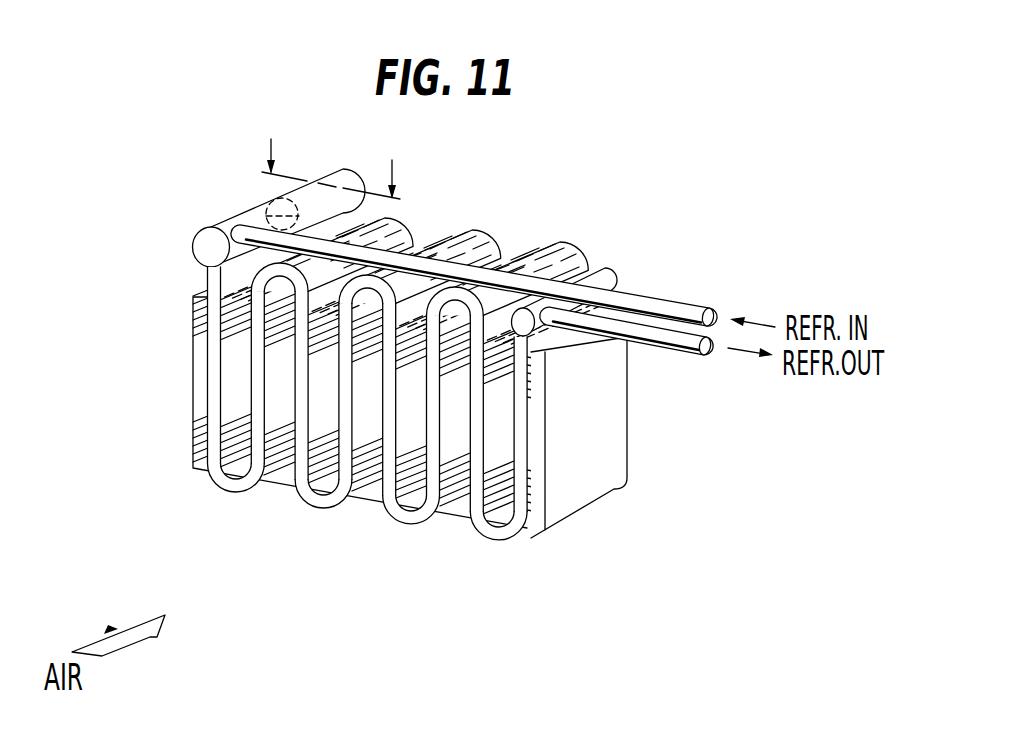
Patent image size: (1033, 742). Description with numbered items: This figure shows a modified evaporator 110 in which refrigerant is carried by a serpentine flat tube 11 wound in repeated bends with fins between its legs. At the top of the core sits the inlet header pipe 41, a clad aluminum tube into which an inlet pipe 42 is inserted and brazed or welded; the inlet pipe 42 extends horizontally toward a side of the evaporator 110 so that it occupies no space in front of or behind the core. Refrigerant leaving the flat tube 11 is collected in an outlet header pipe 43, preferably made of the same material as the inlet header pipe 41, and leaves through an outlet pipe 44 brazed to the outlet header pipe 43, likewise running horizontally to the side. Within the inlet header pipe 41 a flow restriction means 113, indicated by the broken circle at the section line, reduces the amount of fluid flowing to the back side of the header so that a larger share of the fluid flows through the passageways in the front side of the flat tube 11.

The flat tube 11 is at (212, 468).
The inlet header pipe 41 is at (331, 172).
The inlet pipe 42 is at (678, 307).
The outlet header pipe 43 is at (622, 268).
The outlet pipe 44 is at (681, 344).
The evaporator 110 is at (410, 378).
The flow restriction means 113 is at (269, 203).